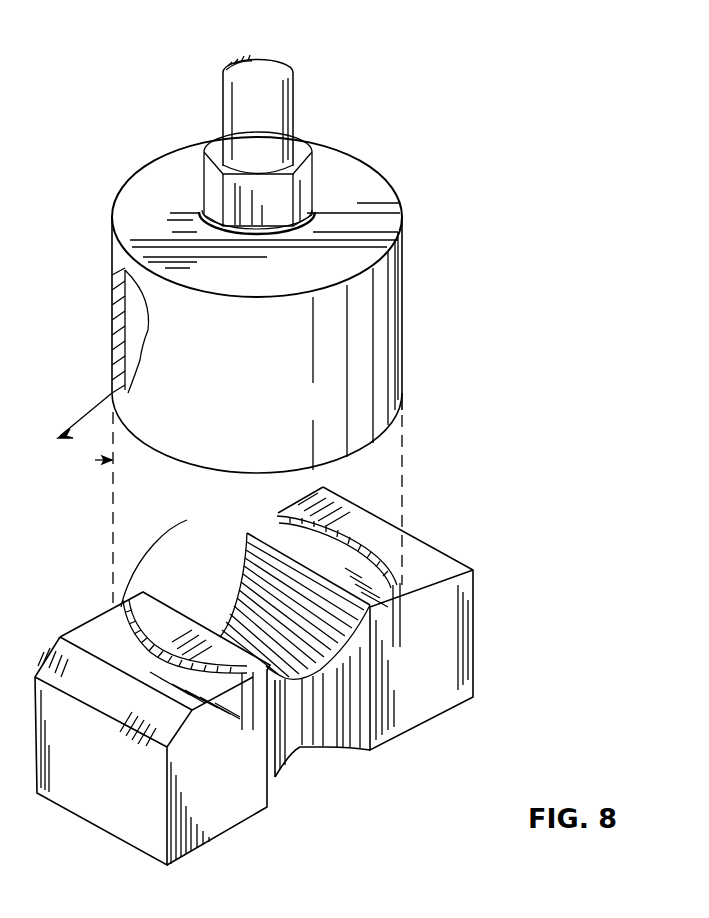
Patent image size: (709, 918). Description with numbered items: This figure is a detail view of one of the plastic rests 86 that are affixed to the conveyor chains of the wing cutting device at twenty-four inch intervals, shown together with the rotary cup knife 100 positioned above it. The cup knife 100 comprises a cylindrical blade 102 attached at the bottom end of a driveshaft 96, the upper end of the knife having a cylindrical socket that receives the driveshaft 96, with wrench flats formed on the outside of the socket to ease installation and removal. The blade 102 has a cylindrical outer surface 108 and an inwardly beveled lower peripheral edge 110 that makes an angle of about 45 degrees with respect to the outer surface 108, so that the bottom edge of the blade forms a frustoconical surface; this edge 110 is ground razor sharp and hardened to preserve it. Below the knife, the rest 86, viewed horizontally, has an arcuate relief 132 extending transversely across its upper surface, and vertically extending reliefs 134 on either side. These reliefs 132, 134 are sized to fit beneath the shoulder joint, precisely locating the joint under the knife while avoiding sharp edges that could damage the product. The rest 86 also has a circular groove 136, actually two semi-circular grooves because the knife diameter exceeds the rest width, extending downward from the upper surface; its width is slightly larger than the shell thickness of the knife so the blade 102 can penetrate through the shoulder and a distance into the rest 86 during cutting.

The rest 86 is at (484, 607).
The driveshaft 96 is at (294, 98).
The rotary cup knife 100 is at (420, 284).
The cylindrical blade 102 is at (273, 455).
The cylindrical outer surface 108 is at (113, 362).
The inwardly beveled lower peripheral edge 110 is at (118, 391).
The arcuate relief 132 is at (297, 638).
The vertically extending relief 134 is at (330, 724).
The circular groove 136 is at (276, 520).
The angle of beveled edge 45 is at (84, 433).